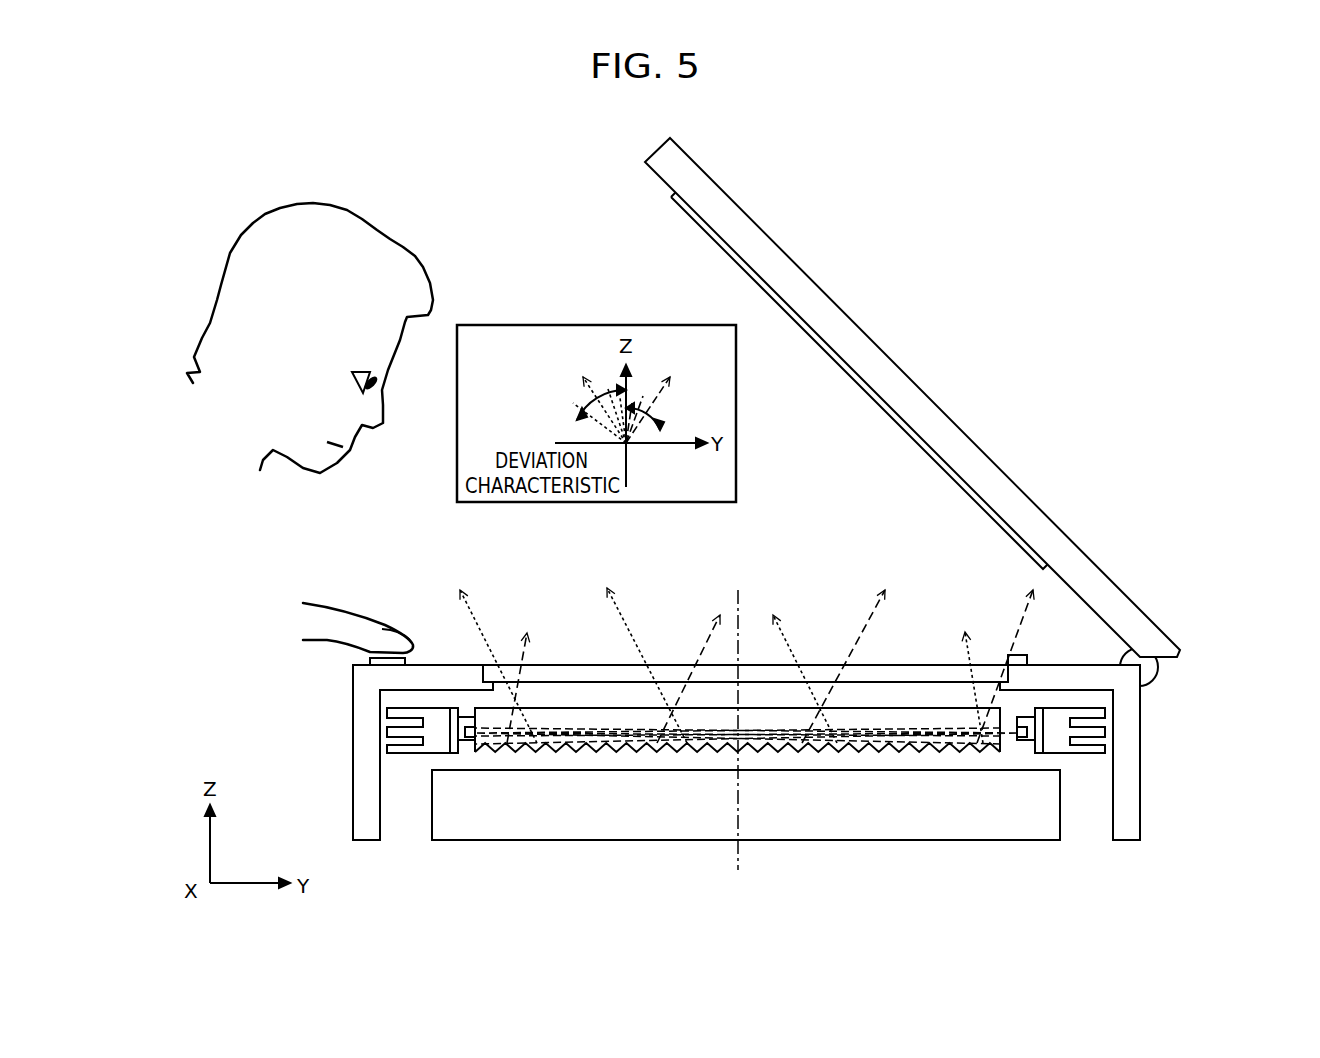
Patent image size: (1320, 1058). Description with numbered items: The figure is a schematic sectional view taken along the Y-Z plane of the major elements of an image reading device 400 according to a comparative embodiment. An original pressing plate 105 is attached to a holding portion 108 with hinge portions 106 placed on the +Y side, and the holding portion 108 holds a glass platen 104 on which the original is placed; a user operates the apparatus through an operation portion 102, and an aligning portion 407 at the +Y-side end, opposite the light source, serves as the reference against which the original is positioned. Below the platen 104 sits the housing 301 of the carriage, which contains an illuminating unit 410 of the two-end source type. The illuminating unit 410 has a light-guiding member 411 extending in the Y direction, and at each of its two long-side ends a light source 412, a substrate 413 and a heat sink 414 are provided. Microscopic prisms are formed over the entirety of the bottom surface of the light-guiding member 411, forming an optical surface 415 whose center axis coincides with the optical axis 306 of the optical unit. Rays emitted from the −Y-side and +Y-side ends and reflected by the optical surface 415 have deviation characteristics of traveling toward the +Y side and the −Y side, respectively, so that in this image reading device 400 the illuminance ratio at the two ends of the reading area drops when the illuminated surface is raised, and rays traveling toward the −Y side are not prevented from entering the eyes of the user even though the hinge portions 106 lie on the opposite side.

The operation portion 102 is at (408, 662).
The platen 104 is at (557, 673).
The original pressing plate 105 is at (1093, 572).
The hinge portions 106 is at (1148, 680).
The holding portion 108 is at (360, 680).
The housing 301 is at (592, 828).
The optical axis 306 is at (740, 865).
The image reading device 400 is at (852, 174).
The aligning portion 407 is at (1017, 655).
The illuminating unit 410 is at (348, 703).
The light-guiding member 411 is at (902, 720).
The light source 412 is at (465, 740).
The substrate 413 is at (452, 752).
The heat sink 414 is at (407, 750).
The optical surface 415 is at (817, 748).